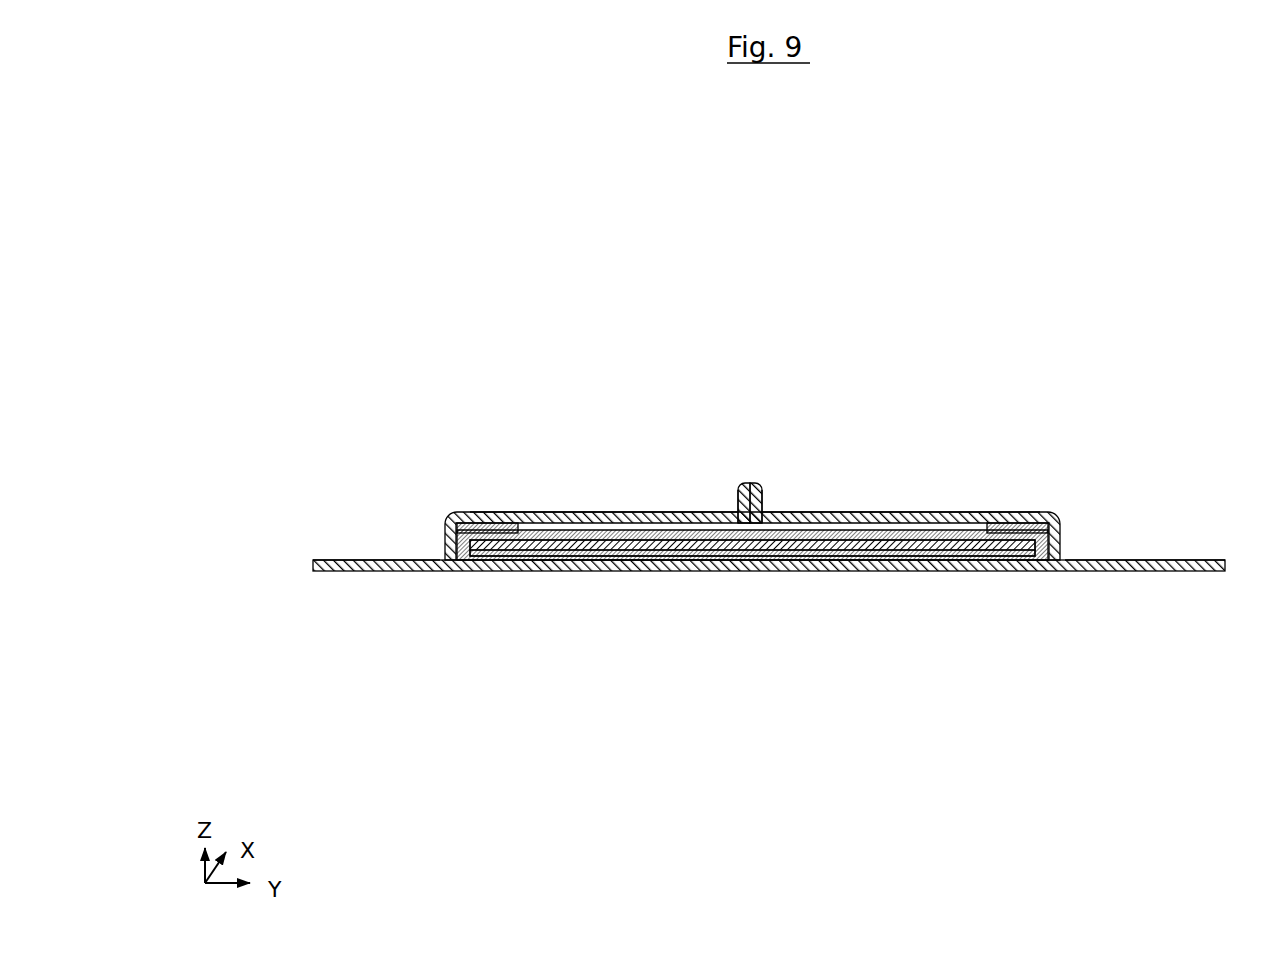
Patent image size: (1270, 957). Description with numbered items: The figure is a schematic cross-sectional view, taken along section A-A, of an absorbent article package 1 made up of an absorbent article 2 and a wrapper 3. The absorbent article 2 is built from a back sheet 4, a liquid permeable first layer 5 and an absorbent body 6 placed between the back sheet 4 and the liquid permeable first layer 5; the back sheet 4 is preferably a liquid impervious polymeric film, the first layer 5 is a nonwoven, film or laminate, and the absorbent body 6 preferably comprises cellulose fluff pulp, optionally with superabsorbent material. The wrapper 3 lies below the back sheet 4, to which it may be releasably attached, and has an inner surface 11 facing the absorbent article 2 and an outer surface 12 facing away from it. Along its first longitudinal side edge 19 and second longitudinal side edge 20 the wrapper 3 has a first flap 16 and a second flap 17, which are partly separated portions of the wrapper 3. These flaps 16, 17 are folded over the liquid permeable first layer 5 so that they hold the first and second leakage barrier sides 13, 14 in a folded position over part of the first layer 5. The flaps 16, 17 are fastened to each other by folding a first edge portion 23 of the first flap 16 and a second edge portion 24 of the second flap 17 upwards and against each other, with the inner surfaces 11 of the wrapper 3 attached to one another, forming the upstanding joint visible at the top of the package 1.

The absorbent article package 1 is at (497, 417).
The absorbent article 2 is at (548, 415).
The wrapper 3 is at (730, 571).
The back sheet 4 is at (497, 560).
The liquid permeable first layer 5 is at (598, 548).
The absorbent body 6 is at (540, 553).
The inner surface 11 is at (748, 481).
The outer surface 12 is at (755, 481).
The first leakage barrier side 13 is at (488, 527).
The second leakage barrier side 14 is at (1010, 527).
The first flap 16 is at (882, 511).
The second flap 17 is at (643, 512).
The first longitudinal side edge 19 is at (312, 550).
The second longitudinal side edge 20 is at (1226, 550).
The first edge portion 23 is at (764, 484).
The second edge portion 24 is at (739, 484).